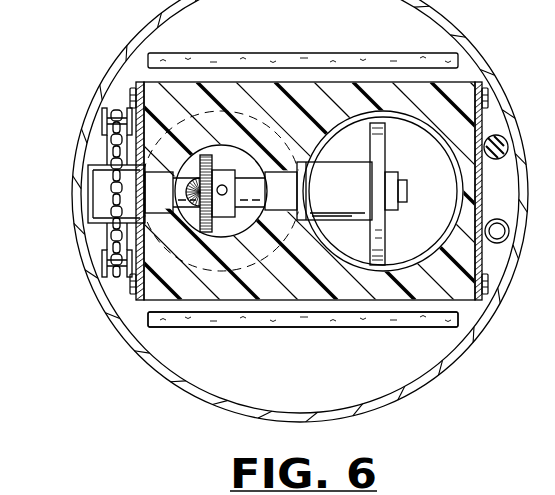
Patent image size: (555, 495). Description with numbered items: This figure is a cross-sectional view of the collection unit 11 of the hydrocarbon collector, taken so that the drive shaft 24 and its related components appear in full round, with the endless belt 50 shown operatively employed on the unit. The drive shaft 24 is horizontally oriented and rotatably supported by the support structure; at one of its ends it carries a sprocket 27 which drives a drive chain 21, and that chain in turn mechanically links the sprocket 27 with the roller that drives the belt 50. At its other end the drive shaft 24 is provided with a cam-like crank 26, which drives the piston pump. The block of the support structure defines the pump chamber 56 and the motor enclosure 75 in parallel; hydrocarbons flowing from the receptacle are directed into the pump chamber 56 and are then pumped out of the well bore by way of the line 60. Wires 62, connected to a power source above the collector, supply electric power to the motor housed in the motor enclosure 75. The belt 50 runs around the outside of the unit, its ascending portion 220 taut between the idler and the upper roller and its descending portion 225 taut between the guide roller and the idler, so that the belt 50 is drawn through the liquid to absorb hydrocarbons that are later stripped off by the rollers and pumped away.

The collection unit 11 is at (133, 78).
The drive chain 21 is at (110, 106).
The drive shaft 24 is at (252, 208).
The cam-like crank 26 is at (203, 153).
The sprocket 27 is at (108, 196).
The endless belt 50 is at (258, 327).
The pump chamber 56 is at (428, 165).
The line 60 is at (504, 242).
The wires 62 is at (500, 160).
The motor enclosure 75 is at (281, 191).
The ascending portion 220 is at (317, 52).
The descending portion 225 is at (382, 327).